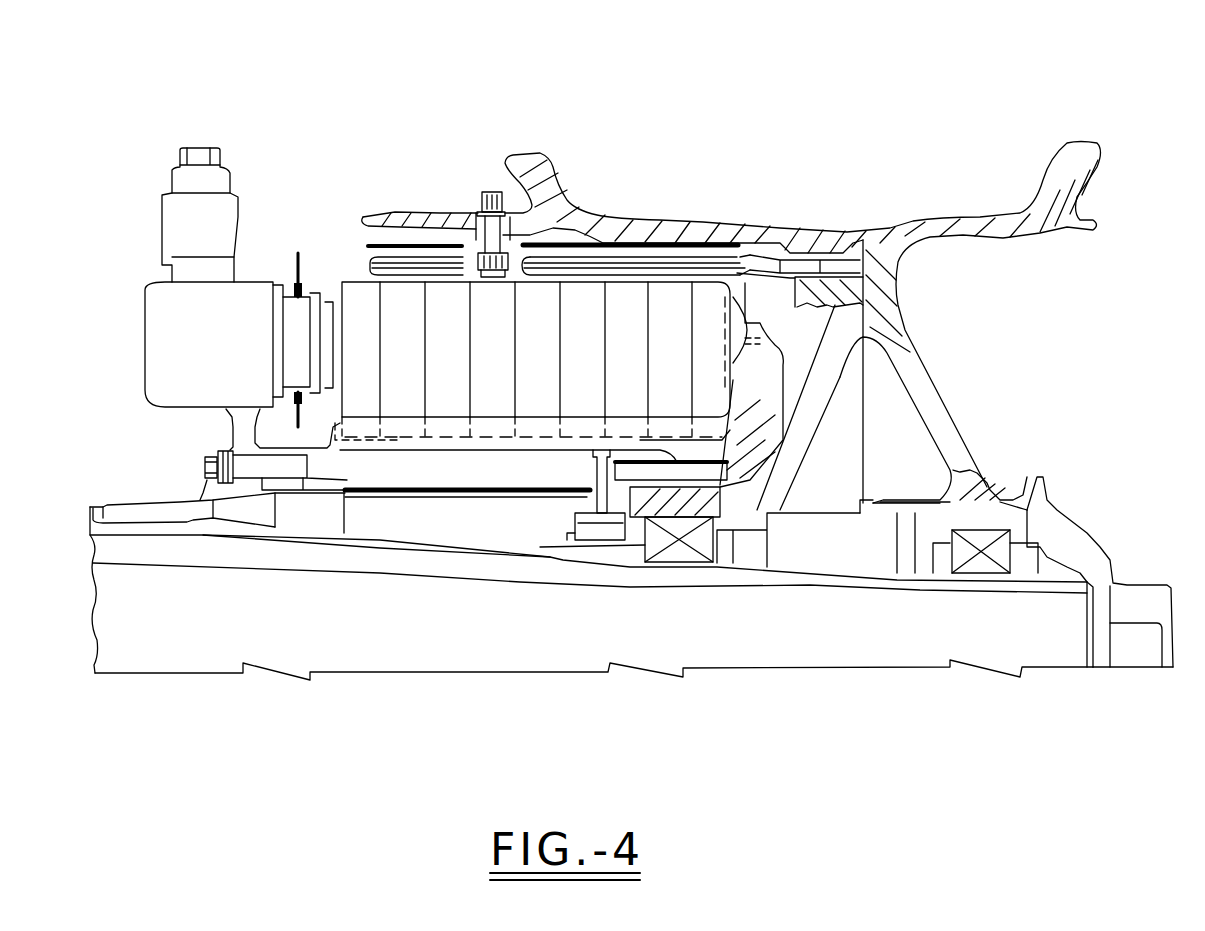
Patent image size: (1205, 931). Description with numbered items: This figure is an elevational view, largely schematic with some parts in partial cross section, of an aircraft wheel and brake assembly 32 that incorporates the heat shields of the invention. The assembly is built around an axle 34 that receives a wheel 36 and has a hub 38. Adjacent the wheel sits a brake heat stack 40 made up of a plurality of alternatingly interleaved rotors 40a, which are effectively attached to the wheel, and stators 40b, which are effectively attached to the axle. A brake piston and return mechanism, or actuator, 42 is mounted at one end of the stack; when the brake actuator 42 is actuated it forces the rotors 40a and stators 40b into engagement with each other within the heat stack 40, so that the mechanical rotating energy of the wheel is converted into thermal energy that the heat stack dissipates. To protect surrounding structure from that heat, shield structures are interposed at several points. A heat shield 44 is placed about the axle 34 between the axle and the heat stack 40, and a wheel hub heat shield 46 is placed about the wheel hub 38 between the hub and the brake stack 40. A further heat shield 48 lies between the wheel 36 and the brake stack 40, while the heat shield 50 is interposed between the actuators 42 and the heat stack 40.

The aircraft wheel and brake assembly 32 is at (799, 133).
The axle 34 is at (478, 570).
The wheel 36 is at (958, 217).
The hub 38 is at (990, 490).
The brake heat stack 40 is at (752, 305).
The rotors 40a is at (573, 400).
The stators 40b is at (363, 403).
The brake piston and return mechanism 42 is at (147, 329).
The heat shield 44 is at (490, 497).
The wheel hub heat shield 46 is at (630, 463).
The heat shield 48 is at (662, 240).
The heat shield 50 is at (298, 258).